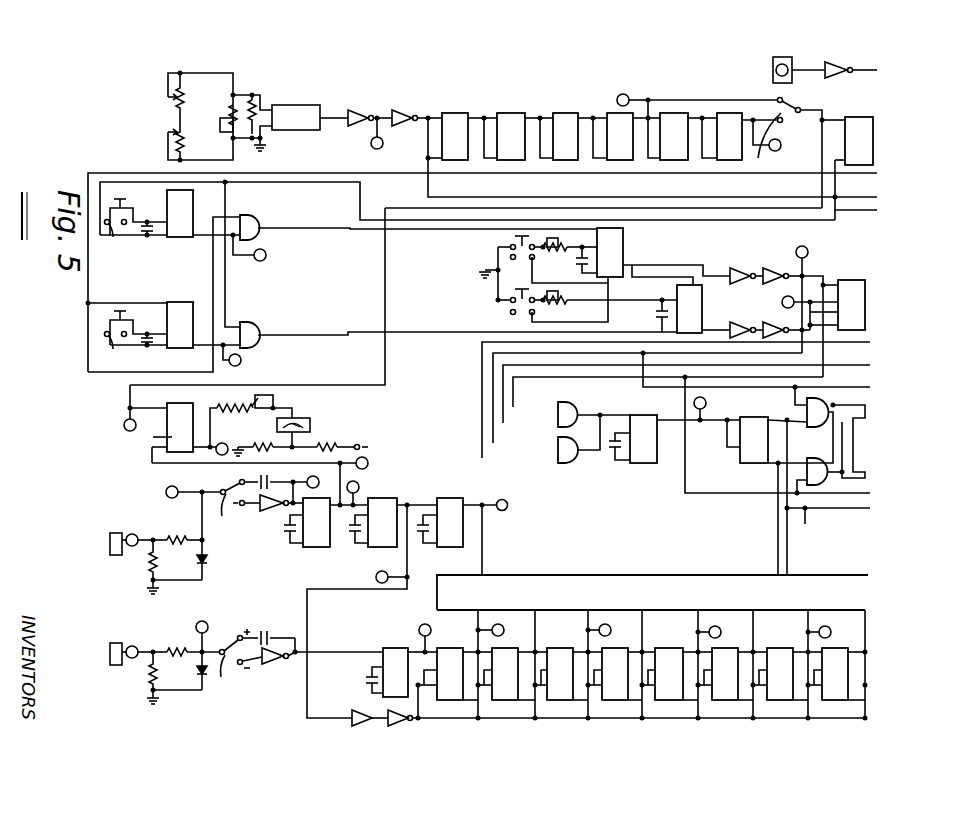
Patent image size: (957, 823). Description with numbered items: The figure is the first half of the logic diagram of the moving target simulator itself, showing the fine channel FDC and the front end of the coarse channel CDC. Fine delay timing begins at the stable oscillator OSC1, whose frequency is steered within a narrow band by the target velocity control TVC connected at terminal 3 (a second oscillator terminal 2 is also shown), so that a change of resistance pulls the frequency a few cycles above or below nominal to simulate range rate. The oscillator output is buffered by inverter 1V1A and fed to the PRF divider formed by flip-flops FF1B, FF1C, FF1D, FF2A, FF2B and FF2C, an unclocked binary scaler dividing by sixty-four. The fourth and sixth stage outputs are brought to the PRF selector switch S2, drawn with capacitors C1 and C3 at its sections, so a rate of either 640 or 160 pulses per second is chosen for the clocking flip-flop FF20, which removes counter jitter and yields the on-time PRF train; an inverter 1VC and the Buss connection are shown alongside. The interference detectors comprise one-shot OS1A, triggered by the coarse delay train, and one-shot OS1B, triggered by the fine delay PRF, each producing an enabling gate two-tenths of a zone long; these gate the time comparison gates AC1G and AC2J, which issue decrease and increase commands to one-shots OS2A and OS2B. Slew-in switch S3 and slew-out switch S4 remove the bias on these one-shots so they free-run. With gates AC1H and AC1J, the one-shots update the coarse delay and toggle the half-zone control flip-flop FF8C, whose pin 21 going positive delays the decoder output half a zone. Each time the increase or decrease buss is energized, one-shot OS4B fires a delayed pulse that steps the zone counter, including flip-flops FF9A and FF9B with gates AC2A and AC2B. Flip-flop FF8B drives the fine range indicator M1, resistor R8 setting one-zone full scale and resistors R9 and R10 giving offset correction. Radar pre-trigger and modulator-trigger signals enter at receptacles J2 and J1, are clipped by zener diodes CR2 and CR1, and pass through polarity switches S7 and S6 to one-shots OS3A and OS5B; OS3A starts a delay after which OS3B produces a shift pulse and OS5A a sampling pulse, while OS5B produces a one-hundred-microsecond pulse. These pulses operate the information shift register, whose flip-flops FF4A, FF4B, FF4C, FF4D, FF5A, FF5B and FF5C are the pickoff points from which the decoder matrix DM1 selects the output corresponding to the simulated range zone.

The target velocity control TVC is at (220, 124).
The oscillator OSC1 is at (303, 103).
The terminal 3 is at (264, 104).
The oscillator terminal 2 is at (263, 128).
The inverter 1V1A is at (352, 135).
The flip-flop FF1B is at (463, 112).
The fine channel FDC is at (556, 102).
The flip-flop FF1C is at (493, 112).
The flip-flop FF1D is at (574, 110).
The flip-flop FF2A is at (633, 115).
The flip-flop FF2B is at (675, 119).
The flip-flop FF2C is at (731, 113).
The PRF selector switch S2 is at (456, 233).
The 640 pulses-per-second PRF selection 640 is at (782, 102).
The 160 pulses-per-second PRF selection 160 is at (788, 163).
The increase/decrease buss Buss is at (773, 62).
The inverter 1VC is at (846, 66).
The clocking flip-flop FF20 is at (873, 147).
The capacitor C1 is at (133, 210).
The capacitor C3 is at (126, 320).
The one-shot multivibrator OS1A is at (195, 240).
The one-shot multivibrator OS1B is at (185, 297).
The time comparison gate AC1G is at (255, 215).
The time comparison gate AC2J is at (256, 322).
The slew out switch S4 is at (517, 238).
The slew in switch S3 is at (525, 311).
The one-shot multivibrator OS2A is at (626, 242).
The one-shot multivibrator OS2B is at (704, 304).
The half-zone delay control flip-flop FF8C is at (867, 304).
The pin 21 is at (865, 325).
The flip-flop FF8B is at (160, 420).
The resistor R8 is at (257, 411).
The fine range indicator M1 is at (310, 425).
The resistor R9 is at (268, 450).
The resistor R10 is at (322, 452).
The gate AC1H is at (584, 401).
The gate AC1J is at (571, 472).
The one-shot multivibrator OS4B is at (630, 470).
The flip-flop FF9A is at (743, 471).
The AND gate AC2A is at (805, 418).
The flip-flop FF9B is at (867, 418).
The AND gate AC2B is at (842, 478).
The polarity switch S7 is at (242, 504).
The one-shot multivibrator OS3A is at (308, 548).
The one-shot multivibrator OS3B is at (381, 548).
The one-shot multivibrator OS5A is at (469, 558).
The input receptacle J2 is at (110, 546).
The double-ended zener diode CR2 is at (206, 558).
The input receptacle J1 is at (110, 652).
The double-ended zener diode CR1 is at (206, 670).
The polarity switch S6 is at (258, 657).
The one-shot multivibrator OS5B is at (383, 660).
The decoder matrix DM1 is at (742, 610).
The coarse channel CDC is at (945, 606).
The flip-flop FF4A is at (447, 648).
The flip-flop FF4B is at (505, 702).
The flip-flop FF4C is at (563, 702).
The flip-flop FF4D is at (618, 702).
The flip-flop FF5A is at (675, 702).
The flip-flop FF5B is at (785, 702).
The flip-flop FF5C is at (845, 668).